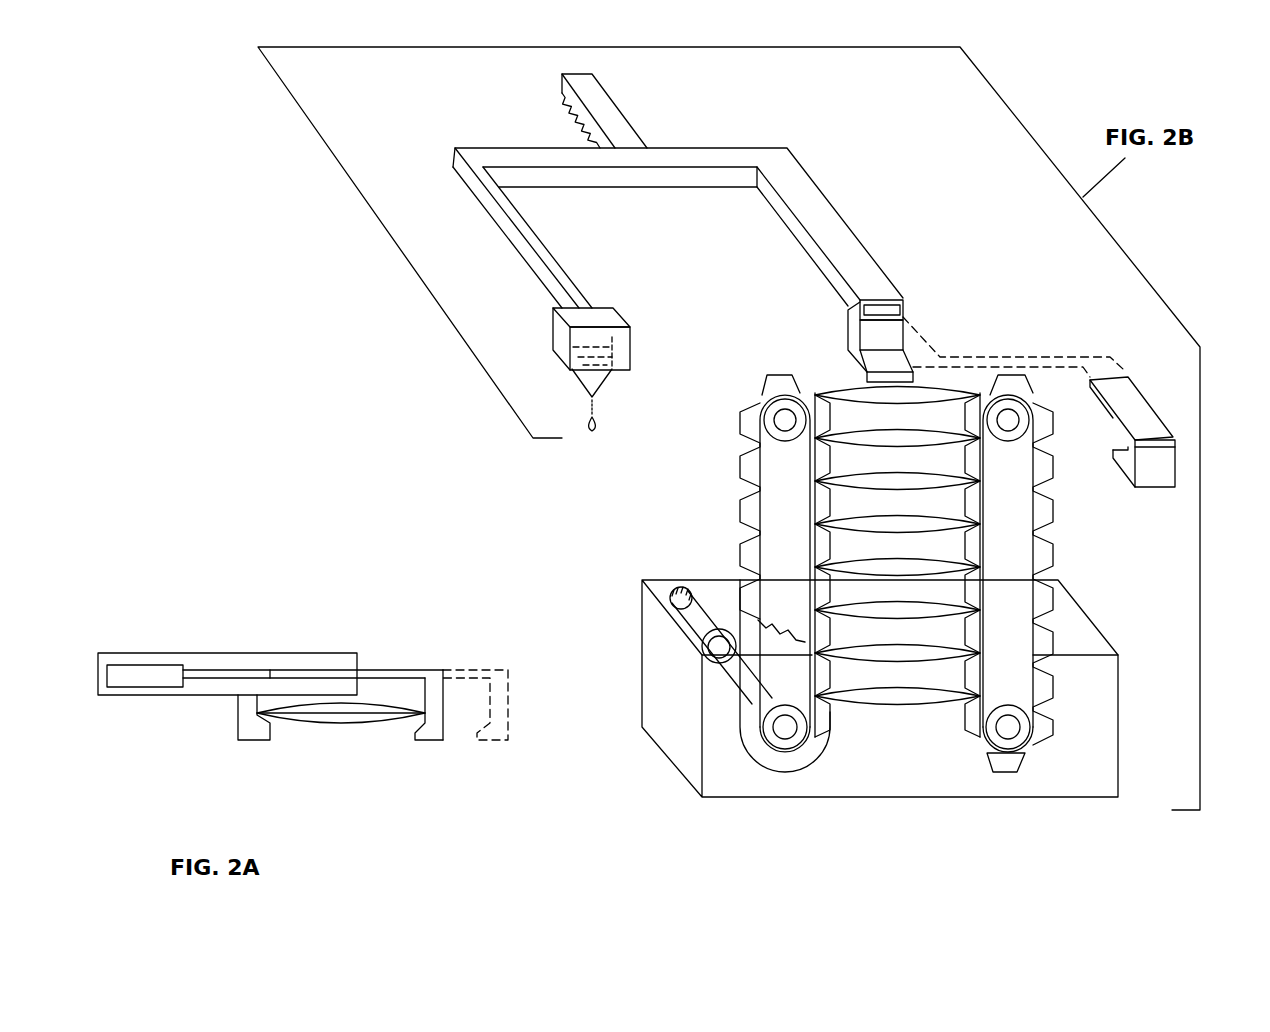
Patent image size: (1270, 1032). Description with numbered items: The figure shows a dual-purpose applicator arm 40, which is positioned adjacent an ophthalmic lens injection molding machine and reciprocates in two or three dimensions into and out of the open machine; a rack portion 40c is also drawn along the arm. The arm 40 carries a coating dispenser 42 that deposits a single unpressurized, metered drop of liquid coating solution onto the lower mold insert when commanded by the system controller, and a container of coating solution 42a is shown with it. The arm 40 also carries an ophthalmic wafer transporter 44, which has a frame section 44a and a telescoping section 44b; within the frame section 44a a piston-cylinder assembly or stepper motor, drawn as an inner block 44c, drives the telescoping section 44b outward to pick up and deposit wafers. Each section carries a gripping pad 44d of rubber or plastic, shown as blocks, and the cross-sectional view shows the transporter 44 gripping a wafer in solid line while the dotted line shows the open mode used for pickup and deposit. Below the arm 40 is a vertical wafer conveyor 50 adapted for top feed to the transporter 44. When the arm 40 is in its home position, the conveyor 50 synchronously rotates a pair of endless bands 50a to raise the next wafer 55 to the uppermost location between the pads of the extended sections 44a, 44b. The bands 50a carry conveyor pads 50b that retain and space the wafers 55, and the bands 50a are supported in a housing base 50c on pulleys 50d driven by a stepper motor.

In FIG. 2B, the dual-purpose applicator arm 40 is at (838, 156).
In FIG. 2B, the rack 40c is at (555, 107).
In FIG. 2B, the coating dispenser 42 is at (620, 336).
In FIG. 2B, the container of coating solution 42a is at (620, 357).
In FIG. 2A, the ophthalmic wafer transporter 44 is at (303, 680).
In FIG. 2B, the frame section 44a is at (883, 284).
In FIG. 2A, the frame section 44a is at (168, 652).
In FIG. 2B, the telescoping section 44b is at (1135, 405).
In FIG. 2A, the telescoping section 44b is at (415, 669).
In FIG. 2A, the actuator 44c is at (150, 680).
In FIG. 2A, the gripping pad 44d is at (256, 730).
In FIG. 2B, the vertical wafer conveyor 50 is at (1082, 535).
In FIG. 2B, the endless bands 50a is at (808, 742).
In FIG. 2B, the conveyor pads 50b is at (1054, 596).
In FIG. 2B, the housing base 50c is at (678, 742).
In FIG. 2B, the pulleys 50d is at (772, 740).
In FIG. 2B, the wafer 55 is at (933, 702).